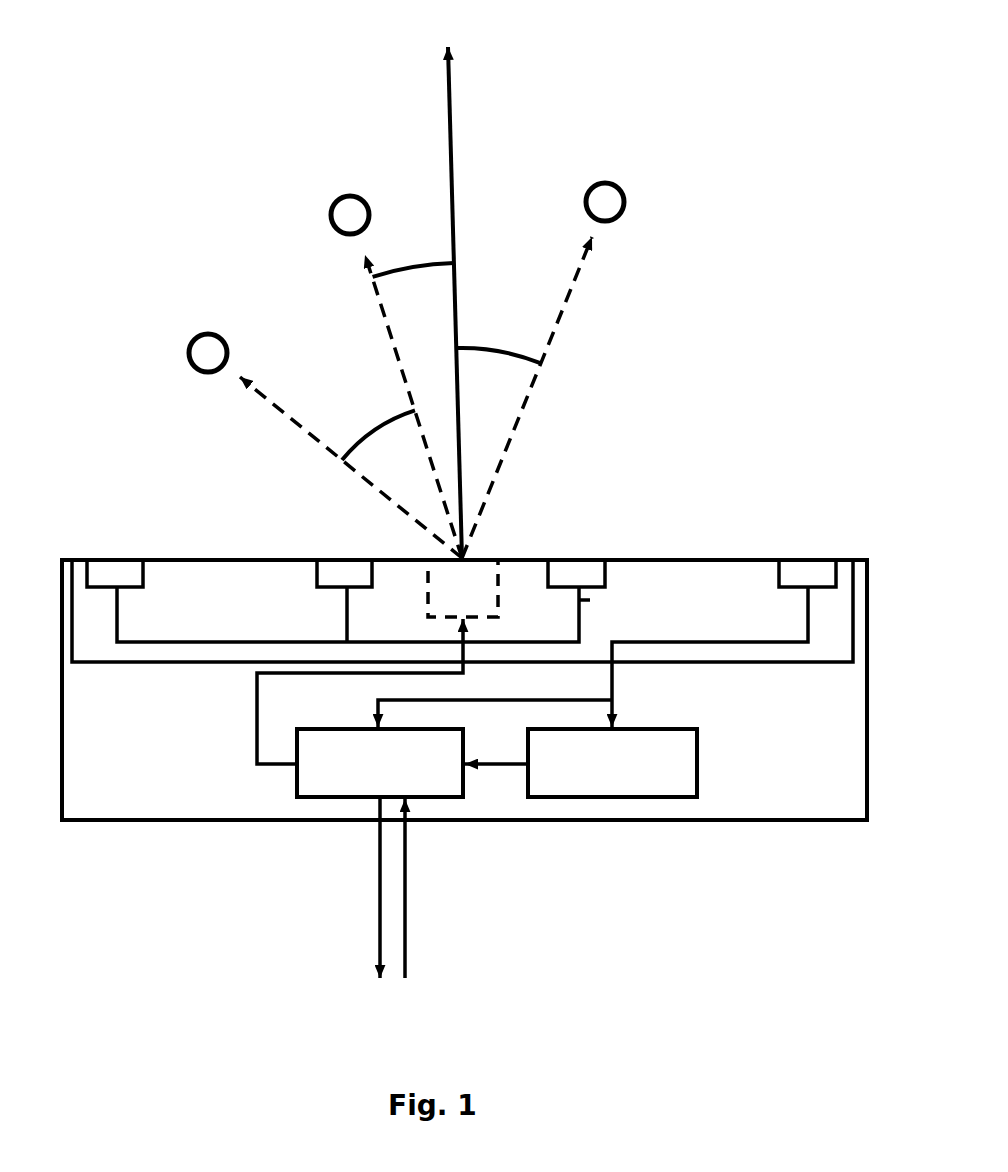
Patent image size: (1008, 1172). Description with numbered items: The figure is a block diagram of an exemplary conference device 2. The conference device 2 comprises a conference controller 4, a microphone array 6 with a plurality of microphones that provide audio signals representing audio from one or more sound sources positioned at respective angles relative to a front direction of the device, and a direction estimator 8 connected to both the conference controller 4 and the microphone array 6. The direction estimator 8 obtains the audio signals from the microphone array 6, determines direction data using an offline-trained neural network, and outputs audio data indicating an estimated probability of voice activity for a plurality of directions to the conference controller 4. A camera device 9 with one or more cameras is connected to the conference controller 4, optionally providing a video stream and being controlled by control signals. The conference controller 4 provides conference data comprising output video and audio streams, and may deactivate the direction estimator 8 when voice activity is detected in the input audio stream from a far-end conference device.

The conference device 2 is at (116, 810).
The conference controller 4 is at (342, 798).
The microphone array 6 is at (462, 499).
The direction estimator 8 is at (691, 798).
The camera device 9 is at (480, 560).